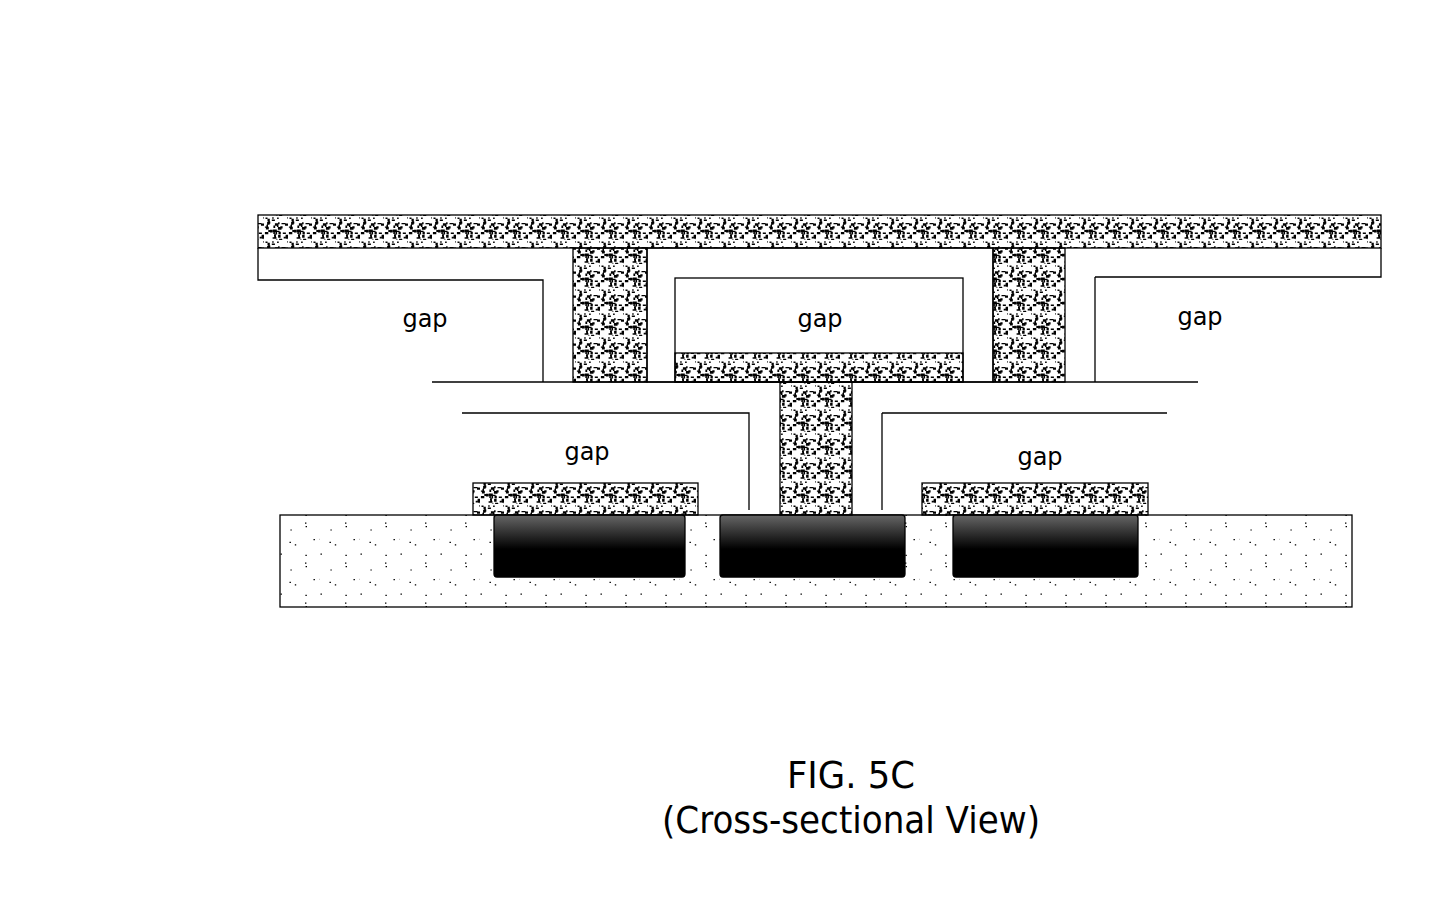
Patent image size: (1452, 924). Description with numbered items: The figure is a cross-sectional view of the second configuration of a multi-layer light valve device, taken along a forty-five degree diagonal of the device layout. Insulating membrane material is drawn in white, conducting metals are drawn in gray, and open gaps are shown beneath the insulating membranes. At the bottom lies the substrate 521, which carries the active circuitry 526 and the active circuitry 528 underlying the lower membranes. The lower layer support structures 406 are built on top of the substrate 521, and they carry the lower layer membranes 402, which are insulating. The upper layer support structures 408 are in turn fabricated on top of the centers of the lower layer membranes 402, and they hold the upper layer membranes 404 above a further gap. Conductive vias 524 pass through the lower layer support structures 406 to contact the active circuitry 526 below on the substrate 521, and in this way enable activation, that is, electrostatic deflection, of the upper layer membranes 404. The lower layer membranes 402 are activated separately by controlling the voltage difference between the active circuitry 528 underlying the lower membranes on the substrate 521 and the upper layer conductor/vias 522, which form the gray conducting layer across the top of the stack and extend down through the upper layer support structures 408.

The lower layer membranes 402 is at (988, 400).
The upper layer membranes 404 is at (1207, 262).
The lower layer support structures 406 is at (882, 436).
The upper layer support structures 408 is at (1097, 330).
The substrate 521 is at (816, 561).
The upper layer conductor/vias 522 is at (600, 302).
The conductive vias 524 is at (827, 460).
The active circuitry 526 is at (728, 575).
The active circuitry underlying the lower membranes 528 is at (520, 545).